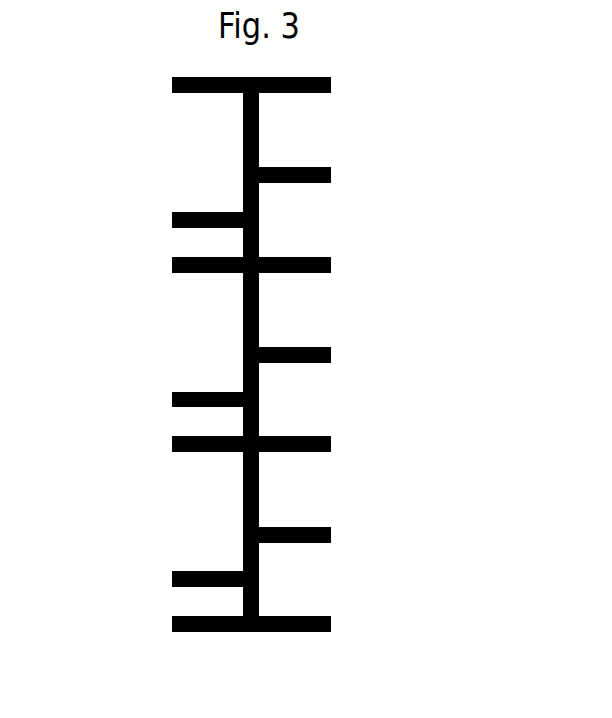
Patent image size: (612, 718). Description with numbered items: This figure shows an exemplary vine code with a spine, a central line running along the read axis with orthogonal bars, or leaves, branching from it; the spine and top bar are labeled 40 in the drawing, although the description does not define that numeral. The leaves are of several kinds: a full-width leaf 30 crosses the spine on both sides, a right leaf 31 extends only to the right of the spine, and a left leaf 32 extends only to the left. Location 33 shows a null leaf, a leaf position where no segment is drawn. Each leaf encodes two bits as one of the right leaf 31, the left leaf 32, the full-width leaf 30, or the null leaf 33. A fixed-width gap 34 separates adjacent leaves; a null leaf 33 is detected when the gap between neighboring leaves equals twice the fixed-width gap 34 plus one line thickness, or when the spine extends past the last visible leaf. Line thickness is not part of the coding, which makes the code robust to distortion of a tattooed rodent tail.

The antenna radiator stem 40 is at (245, 133).
The full-width leaf 30 is at (172, 268).
The right leaf 31 is at (331, 363).
The left leaf 32 is at (172, 405).
The null leaf 33 is at (298, 491).
The fixed-width gap between leaves 34 is at (197, 603).